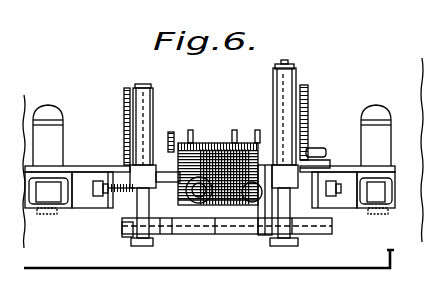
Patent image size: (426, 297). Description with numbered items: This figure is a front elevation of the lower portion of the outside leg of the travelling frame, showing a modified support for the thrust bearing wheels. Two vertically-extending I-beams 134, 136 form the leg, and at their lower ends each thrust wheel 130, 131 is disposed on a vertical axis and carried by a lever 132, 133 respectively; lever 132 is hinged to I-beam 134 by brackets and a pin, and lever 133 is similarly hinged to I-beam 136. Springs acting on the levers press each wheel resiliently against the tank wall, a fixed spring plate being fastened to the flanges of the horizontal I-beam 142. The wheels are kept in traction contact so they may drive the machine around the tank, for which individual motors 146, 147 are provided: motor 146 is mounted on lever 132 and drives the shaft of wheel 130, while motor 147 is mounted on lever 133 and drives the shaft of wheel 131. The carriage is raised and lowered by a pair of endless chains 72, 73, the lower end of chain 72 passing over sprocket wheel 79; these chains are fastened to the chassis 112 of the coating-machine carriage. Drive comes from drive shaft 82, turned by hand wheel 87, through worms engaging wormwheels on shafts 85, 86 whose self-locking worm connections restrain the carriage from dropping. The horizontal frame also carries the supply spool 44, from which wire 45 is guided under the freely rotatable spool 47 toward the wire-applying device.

The motor 146 is at (70, 88).
The motor 147 is at (382, 91).
The endless chain 72 is at (124, 101).
The endless chain 73 is at (308, 103).
The I-beam 134 is at (155, 97).
The I-beam 136 is at (273, 96).
The wire 45 is at (193, 130).
The freely rotatable spool 47 is at (236, 134).
The supply spool 44 is at (261, 125).
The hand wheel 87 is at (311, 148).
The drive shaft 82 is at (316, 160).
The lever 132 is at (82, 203).
The thrust wheel 130 is at (209, 173).
The sprocket wheel 79 is at (128, 238).
The horizontal I-beam 142 is at (146, 246).
The shaft 85 is at (212, 234).
The chassis 112 is at (234, 262).
The shaft 86 is at (258, 241).
The lever 133 is at (338, 198).
The thrust wheel 131 is at (377, 200).